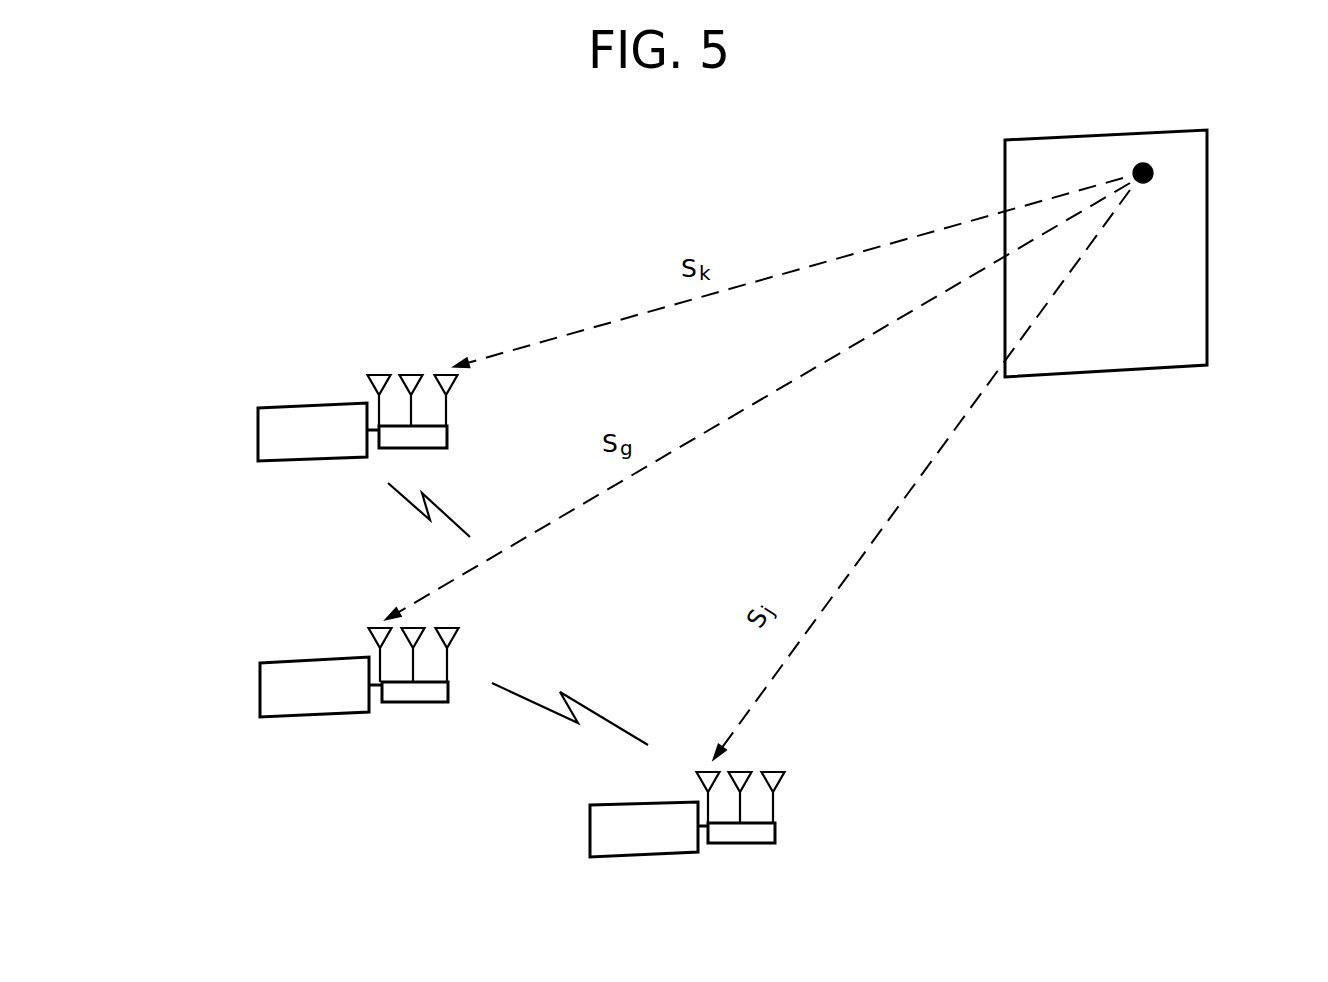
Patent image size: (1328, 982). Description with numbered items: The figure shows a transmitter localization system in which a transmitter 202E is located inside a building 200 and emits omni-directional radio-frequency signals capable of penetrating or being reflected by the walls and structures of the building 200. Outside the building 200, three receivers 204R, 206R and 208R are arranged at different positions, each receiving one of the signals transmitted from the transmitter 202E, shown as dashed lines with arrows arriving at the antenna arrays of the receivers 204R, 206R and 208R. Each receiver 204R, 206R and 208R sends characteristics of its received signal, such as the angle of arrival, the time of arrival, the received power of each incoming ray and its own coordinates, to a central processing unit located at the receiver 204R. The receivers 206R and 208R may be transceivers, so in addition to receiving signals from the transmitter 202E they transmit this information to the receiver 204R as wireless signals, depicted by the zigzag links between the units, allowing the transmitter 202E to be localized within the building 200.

The building 200 is at (1207, 297).
The transmitter 202E is at (1161, 193).
The receiver 204R is at (291, 717).
The receiver 206R is at (620, 857).
The receiver 208R is at (290, 461).